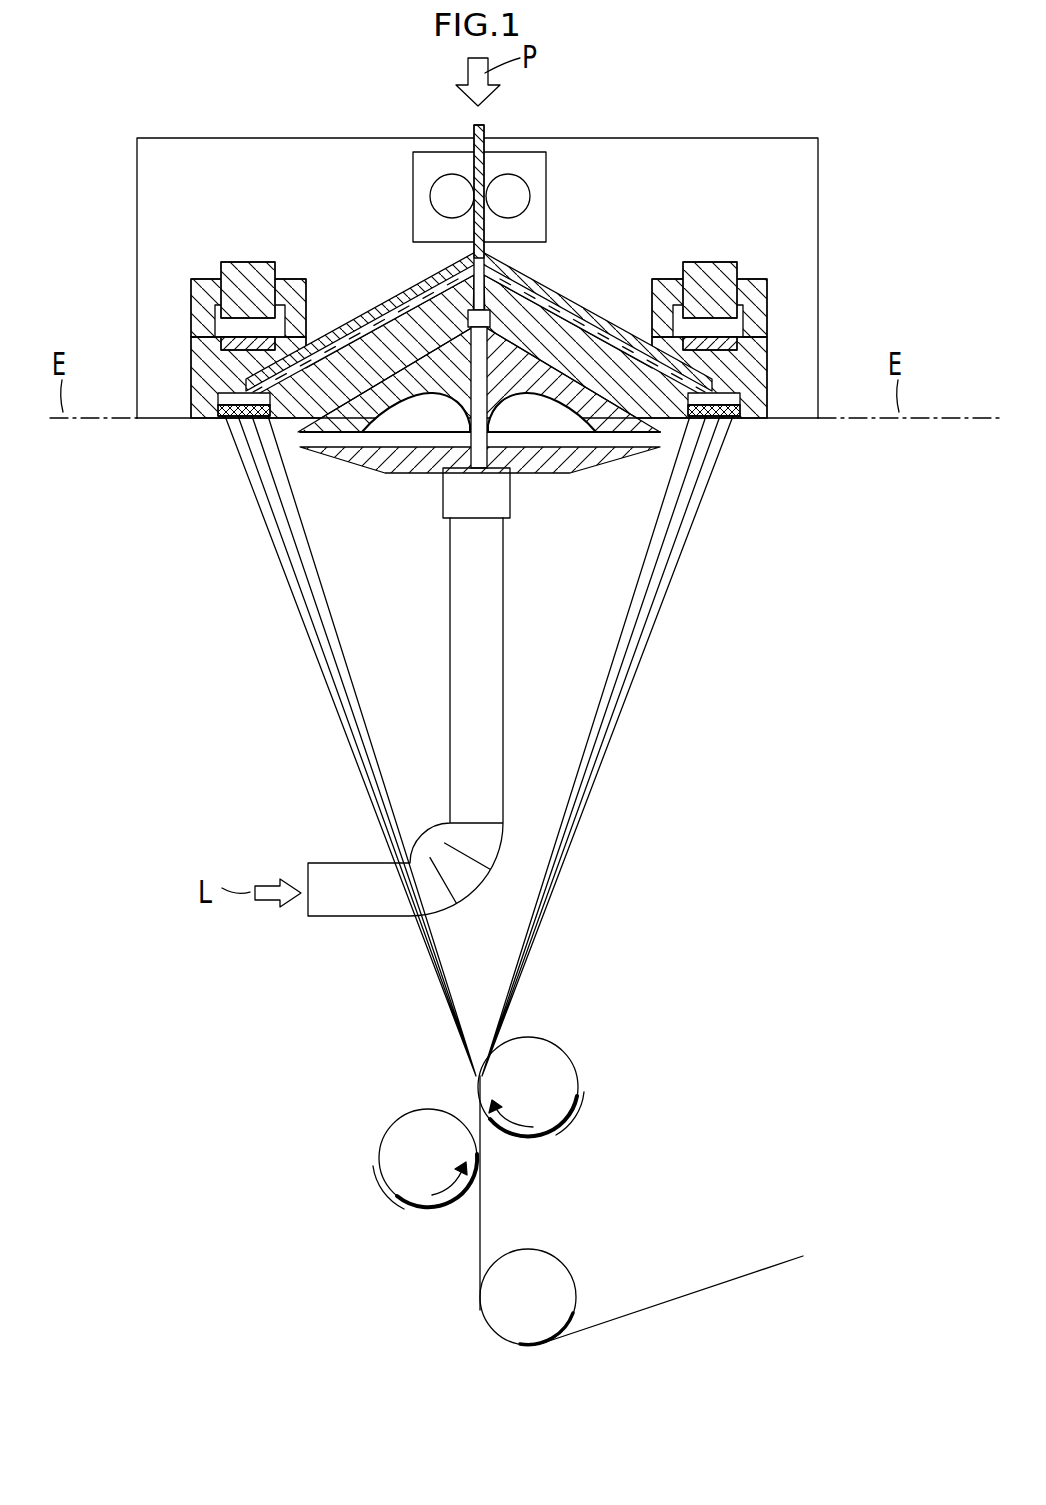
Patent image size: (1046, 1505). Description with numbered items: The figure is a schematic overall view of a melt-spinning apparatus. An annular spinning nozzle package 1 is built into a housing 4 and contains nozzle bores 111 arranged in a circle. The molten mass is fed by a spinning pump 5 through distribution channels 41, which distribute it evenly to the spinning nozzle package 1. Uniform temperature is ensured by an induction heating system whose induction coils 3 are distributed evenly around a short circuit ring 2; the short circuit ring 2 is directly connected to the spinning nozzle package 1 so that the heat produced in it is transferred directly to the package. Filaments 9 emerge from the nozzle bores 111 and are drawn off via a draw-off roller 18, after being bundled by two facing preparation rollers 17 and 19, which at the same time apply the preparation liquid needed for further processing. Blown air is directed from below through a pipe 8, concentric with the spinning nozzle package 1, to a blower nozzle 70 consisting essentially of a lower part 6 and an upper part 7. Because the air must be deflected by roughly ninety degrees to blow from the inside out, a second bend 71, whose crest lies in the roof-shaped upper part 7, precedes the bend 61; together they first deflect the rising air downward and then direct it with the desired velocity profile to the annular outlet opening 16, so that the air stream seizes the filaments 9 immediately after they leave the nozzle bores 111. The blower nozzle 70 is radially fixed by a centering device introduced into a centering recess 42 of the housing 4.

The spinning nozzle package 1 is at (767, 390).
The short circuit ring 2 is at (752, 347).
The induction coils 3 is at (780, 300).
The housing 4 is at (790, 197).
The spinning pump 5 is at (527, 156).
The distribution channels 41 is at (580, 312).
The centering recess 42 is at (540, 286).
The lower part 6 is at (408, 468).
The bend 61 is at (604, 440).
The upper part 7 is at (343, 428).
The blower nozzle 70 is at (549, 488).
The second bend 71 is at (432, 400).
The pipe 8 is at (490, 636).
The filaments 9 is at (712, 432).
The outlet opening 16 is at (660, 440).
The nozzle bores 111 is at (742, 418).
The preparation roller 17 is at (400, 1132).
The draw-off roller 18 is at (553, 1285).
The preparation roller 19 is at (557, 1070).